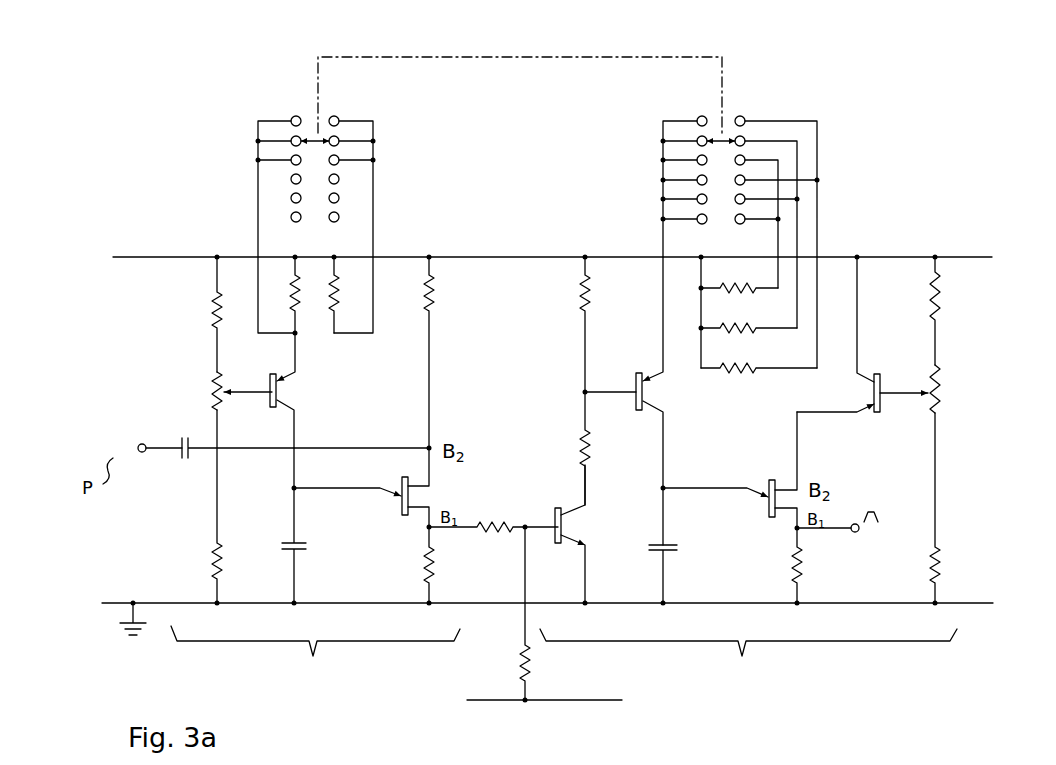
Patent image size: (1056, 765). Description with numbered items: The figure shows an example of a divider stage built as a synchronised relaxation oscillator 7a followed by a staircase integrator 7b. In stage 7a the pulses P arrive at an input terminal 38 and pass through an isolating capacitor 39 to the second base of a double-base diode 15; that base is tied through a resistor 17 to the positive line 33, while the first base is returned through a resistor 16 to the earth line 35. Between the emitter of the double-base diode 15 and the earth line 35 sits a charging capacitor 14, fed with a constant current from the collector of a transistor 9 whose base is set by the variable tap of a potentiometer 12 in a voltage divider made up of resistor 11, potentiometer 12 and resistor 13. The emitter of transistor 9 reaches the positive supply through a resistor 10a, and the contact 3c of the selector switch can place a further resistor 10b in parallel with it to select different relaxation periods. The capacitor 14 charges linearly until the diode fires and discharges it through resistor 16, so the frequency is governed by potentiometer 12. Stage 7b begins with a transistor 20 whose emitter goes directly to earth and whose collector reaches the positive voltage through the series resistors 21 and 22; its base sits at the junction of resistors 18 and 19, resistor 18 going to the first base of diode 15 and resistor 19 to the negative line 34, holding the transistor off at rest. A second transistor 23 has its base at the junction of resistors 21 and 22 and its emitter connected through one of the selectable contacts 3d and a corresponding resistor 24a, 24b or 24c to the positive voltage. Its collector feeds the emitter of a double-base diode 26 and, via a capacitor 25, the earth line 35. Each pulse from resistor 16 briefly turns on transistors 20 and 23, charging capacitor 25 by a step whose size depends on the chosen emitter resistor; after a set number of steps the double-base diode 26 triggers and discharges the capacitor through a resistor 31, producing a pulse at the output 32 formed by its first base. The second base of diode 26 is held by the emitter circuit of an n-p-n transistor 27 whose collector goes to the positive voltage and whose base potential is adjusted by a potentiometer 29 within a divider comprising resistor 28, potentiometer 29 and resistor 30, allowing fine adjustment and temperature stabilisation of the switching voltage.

The contact of the selector switch 3c is at (358, 119).
The selectable contacts 3d is at (744, 118).
The synchronised relaxation oscillator 7a is at (315, 657).
The staircase integrator 7b is at (748, 661).
The transistor 9 is at (270, 409).
The resistor 10a is at (281, 296).
The resistor 10b is at (353, 295).
The resistor 11 is at (206, 508).
The potentiometer 12 is at (214, 396).
The resistor 13 is at (214, 310).
The charging capacitor 14 is at (289, 544).
The double-base diode 15 is at (399, 516).
The resistor 16 is at (416, 566).
The resistor 17 is at (447, 352).
The resistor 18 is at (493, 512).
The resistor 19 is at (520, 670).
The transistor 20 is at (558, 545).
The resistor 21 is at (593, 448).
The resistor 22 is at (570, 324).
The second transistor 23 is at (639, 373).
The resistor 24a is at (739, 312).
The resistor 24b is at (748, 317).
The resistor 24c is at (759, 357).
The capacitor 25 is at (672, 542).
The double-base diode 26 is at (768, 518).
The n-p-n transistor 27 is at (879, 413).
The resistor 28 is at (955, 509).
The potentiometer 29 is at (941, 404).
The resistor 30 is at (952, 311).
The resistor 31 is at (816, 567).
The output 32 is at (859, 531).
The line 33 is at (976, 252).
The line 34 is at (585, 703).
The earth line 35 is at (985, 606).
The input terminal 38 is at (140, 445).
The isolating capacitor 39 is at (186, 460).